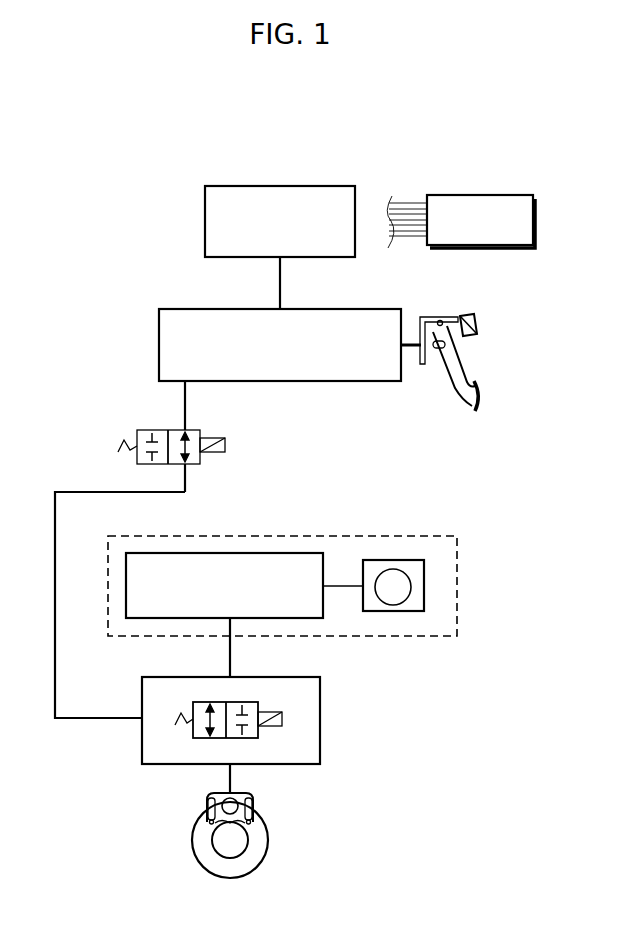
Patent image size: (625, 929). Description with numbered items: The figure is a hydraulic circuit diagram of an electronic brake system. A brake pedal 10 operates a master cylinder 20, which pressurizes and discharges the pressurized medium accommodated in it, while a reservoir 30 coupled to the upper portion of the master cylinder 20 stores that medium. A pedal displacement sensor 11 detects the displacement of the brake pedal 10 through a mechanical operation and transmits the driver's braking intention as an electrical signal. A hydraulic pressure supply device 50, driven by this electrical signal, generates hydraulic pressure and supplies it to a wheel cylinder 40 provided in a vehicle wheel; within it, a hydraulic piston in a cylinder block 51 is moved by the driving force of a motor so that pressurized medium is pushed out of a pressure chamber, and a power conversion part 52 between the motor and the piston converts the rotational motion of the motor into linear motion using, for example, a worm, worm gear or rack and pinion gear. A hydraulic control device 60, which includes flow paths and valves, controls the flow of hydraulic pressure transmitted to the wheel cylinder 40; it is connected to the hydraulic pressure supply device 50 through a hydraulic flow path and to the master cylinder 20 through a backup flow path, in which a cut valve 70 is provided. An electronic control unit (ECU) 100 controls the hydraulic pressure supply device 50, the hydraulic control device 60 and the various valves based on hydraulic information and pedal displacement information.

The brake pedal 10 is at (458, 369).
The pedal displacement sensor 11 is at (470, 321).
The master cylinder 20 is at (181, 309).
The reservoir 30 is at (324, 186).
The wheel cylinder 40 is at (264, 833).
The hydraulic pressure supply device 50 is at (322, 536).
The cylinder block 51 is at (225, 560).
The power conversion part 52 is at (400, 560).
The hydraulic control device 60 is at (320, 710).
The cut valve 70 is at (146, 430).
The electronic control unit (ECU) 100 is at (481, 195).